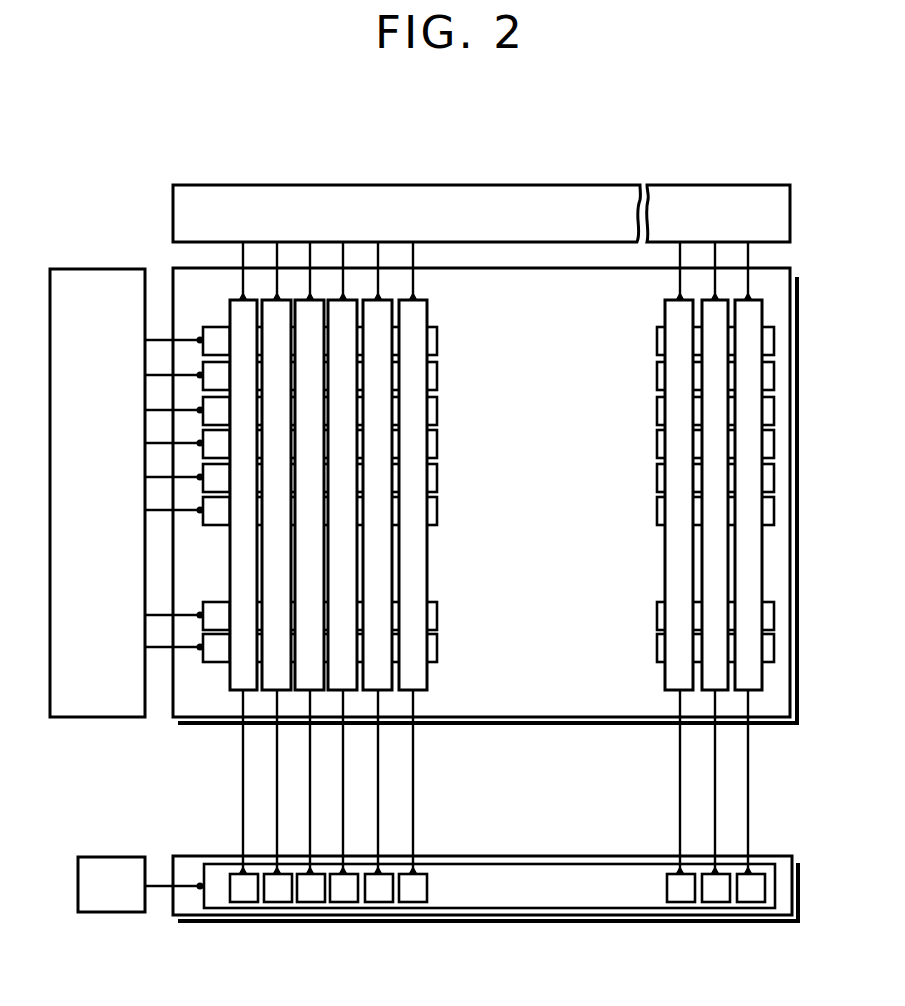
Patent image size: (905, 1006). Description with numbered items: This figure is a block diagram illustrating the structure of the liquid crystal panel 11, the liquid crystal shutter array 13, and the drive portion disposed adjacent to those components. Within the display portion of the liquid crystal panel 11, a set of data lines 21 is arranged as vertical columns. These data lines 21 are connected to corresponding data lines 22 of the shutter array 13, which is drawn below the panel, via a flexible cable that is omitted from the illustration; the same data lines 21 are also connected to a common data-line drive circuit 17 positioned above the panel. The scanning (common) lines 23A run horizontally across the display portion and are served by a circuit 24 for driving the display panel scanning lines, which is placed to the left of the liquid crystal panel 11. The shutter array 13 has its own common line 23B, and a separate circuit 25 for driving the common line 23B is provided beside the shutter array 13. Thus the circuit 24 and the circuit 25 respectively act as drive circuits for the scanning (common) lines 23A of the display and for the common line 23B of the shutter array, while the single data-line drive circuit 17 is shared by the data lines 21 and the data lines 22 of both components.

The liquid crystal panel 11 is at (798, 283).
The liquid crystal shutter array 13 is at (799, 894).
The data-line drive circuit 17 is at (790, 203).
The data lines 21 is at (765, 556).
The data lines 22 is at (764, 876).
The scanning (common) lines 23A is at (203, 330).
The common line 23B is at (219, 898).
The circuit for driving the display panel scanning lines 24 is at (85, 268).
The circuit for driving the common line 25 is at (107, 914).